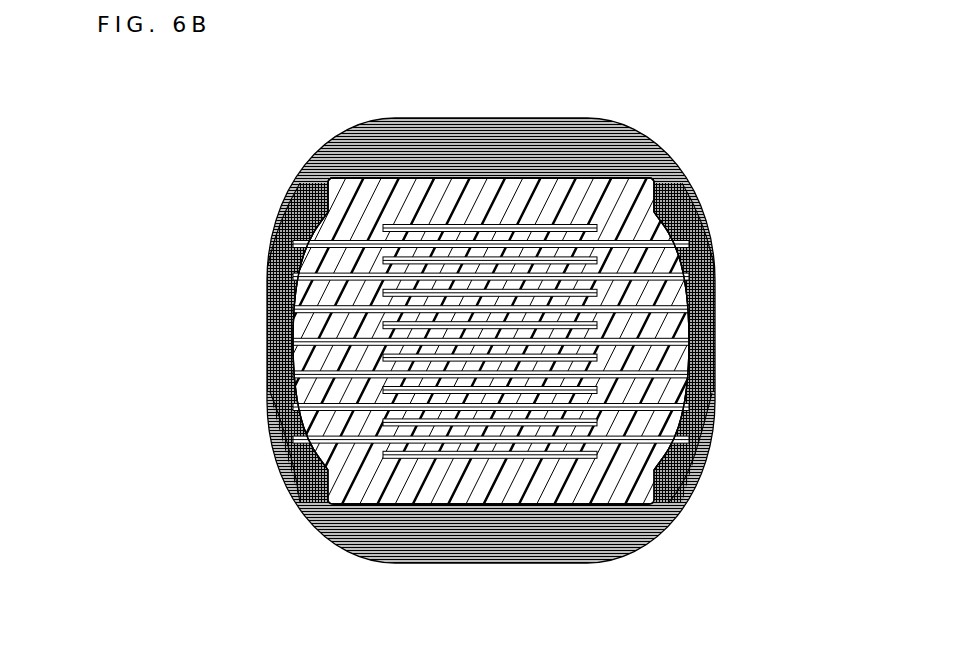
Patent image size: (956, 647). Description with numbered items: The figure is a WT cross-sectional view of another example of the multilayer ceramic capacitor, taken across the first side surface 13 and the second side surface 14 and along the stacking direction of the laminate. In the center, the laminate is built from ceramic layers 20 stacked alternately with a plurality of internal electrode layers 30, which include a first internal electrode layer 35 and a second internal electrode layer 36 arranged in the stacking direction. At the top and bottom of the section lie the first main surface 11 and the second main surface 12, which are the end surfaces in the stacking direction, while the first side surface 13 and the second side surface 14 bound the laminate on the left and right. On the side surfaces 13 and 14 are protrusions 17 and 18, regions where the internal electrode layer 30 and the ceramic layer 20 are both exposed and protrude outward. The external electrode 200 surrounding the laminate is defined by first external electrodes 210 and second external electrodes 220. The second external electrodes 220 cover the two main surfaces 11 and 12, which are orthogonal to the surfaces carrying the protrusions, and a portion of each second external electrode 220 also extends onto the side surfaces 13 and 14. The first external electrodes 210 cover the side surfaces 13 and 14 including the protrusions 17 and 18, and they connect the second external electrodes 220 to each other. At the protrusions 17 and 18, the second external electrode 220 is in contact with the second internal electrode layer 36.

The first main surface 11 is at (413, 178).
The second main surface 12 is at (362, 504).
The first side surface 13 is at (327, 200).
The second side surface 14 is at (655, 200).
The protrusion 17 is at (280, 386).
The protrusion 18 is at (702, 393).
The ceramic layer 20 is at (560, 232).
The internal electrode layer 30 is at (518, 424).
The first internal electrode layer 35 is at (445, 462).
The second internal electrode layer 36 is at (628, 442).
The external electrode 200 is at (490, 342).
The first external electrode 210 is at (282, 286).
The second external electrode 220 is at (483, 125).